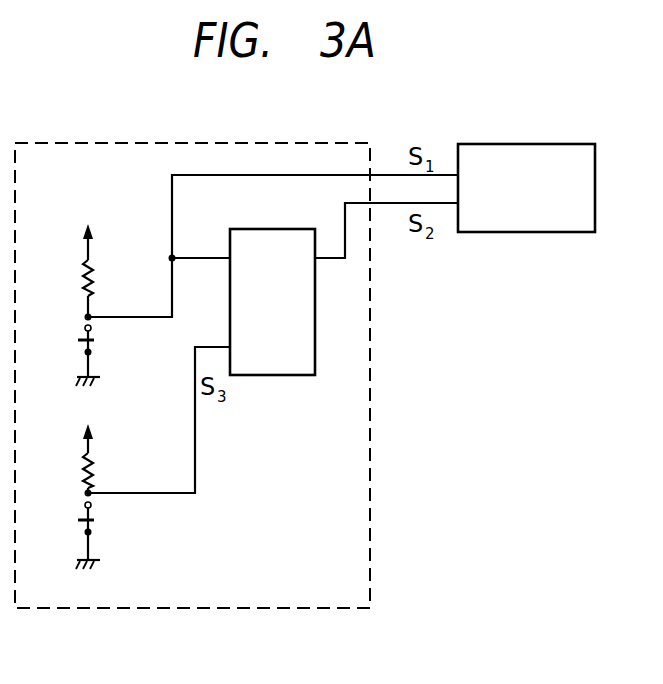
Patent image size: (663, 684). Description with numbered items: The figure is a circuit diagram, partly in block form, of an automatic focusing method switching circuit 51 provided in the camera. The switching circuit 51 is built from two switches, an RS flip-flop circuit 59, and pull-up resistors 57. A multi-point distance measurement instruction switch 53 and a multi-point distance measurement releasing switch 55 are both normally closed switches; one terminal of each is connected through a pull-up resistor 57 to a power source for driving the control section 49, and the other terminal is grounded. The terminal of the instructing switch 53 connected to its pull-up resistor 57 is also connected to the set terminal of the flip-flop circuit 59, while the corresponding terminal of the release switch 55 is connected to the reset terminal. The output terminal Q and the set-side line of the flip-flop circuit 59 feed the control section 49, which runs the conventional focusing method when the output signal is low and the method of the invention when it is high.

The control section 49 is at (525, 144).
The switching circuit 51 is at (310, 140).
The multi-point distance measurement instruction switch 53 is at (96, 339).
The multi-point distance measurement releasing switch 55 is at (97, 517).
The pull-up resistor 57 is at (94, 276).
The RS flip-flop circuit 59 is at (288, 376).